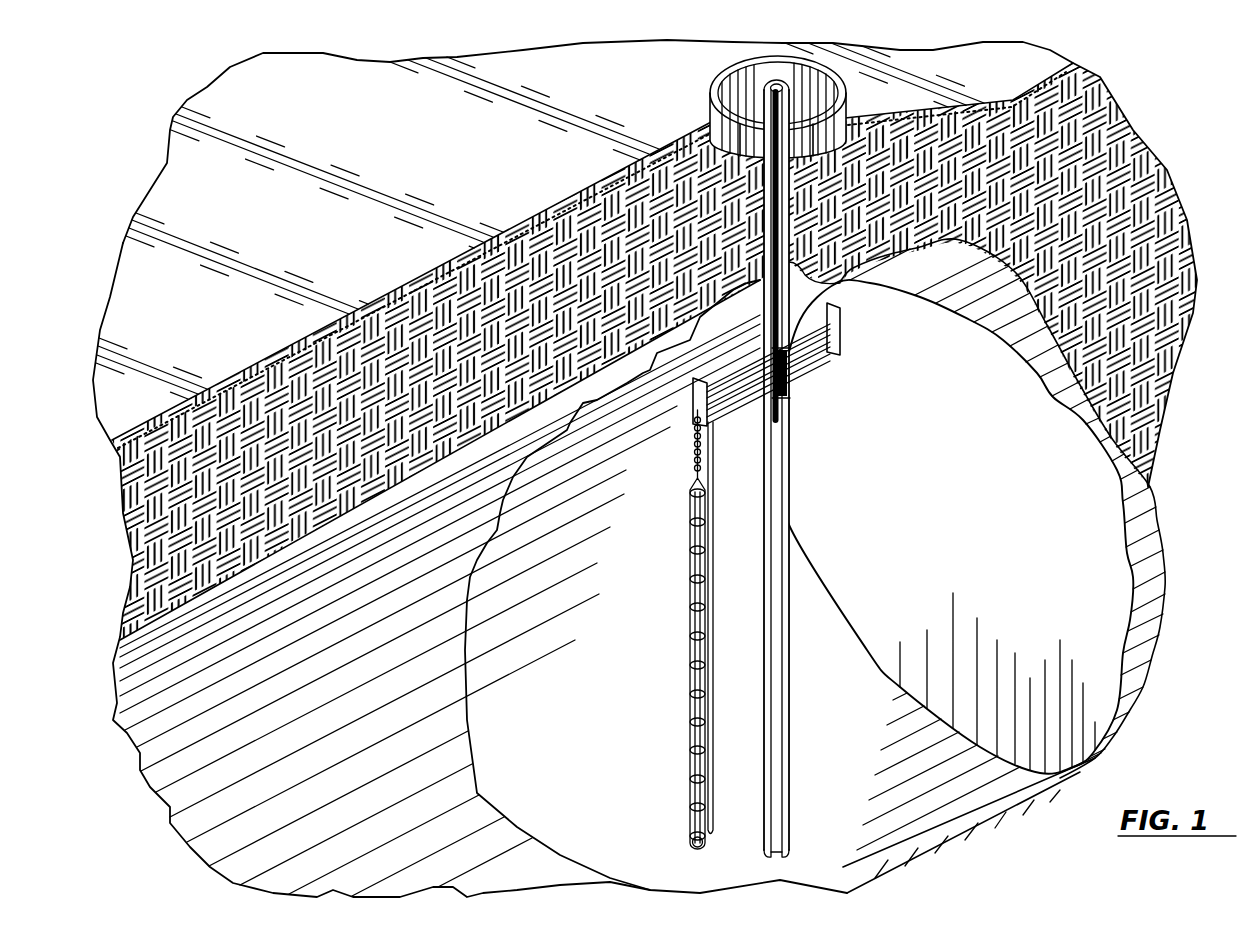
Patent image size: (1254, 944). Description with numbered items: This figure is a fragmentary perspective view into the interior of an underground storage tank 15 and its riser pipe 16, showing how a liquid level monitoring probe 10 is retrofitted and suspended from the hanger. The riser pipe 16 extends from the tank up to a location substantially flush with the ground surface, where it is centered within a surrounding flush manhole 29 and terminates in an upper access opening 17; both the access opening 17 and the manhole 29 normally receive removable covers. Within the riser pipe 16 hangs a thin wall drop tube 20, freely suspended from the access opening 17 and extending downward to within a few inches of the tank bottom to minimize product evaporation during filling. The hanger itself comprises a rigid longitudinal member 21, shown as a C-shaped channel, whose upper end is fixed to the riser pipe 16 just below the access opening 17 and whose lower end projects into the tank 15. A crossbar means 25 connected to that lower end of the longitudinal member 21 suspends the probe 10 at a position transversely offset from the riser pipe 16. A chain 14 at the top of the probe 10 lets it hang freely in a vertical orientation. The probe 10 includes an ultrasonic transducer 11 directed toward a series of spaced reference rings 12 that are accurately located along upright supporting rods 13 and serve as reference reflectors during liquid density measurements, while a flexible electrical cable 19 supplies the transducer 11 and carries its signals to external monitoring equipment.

The liquid level monitoring probe 10 is at (677, 571).
The ultrasonic transducer 11 is at (690, 847).
The reference rings 12 is at (690, 697).
The supporting rods 13 is at (690, 623).
The chain 14 is at (692, 452).
The storage tank 15 is at (1143, 540).
The riser pipe 16 is at (690, 157).
The access opening 17 is at (830, 57).
The flexible electrical cable 19 is at (716, 617).
The drop tube 20 is at (785, 727).
The longitudinal member 21 is at (783, 403).
The crossbar means 25 is at (826, 375).
The flush manhole 29 is at (735, 75).